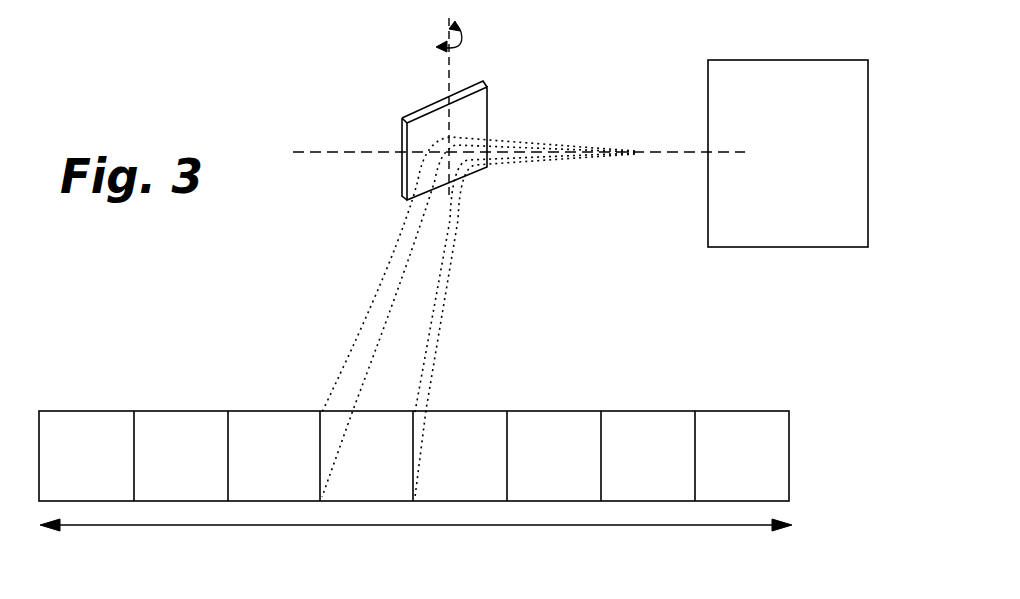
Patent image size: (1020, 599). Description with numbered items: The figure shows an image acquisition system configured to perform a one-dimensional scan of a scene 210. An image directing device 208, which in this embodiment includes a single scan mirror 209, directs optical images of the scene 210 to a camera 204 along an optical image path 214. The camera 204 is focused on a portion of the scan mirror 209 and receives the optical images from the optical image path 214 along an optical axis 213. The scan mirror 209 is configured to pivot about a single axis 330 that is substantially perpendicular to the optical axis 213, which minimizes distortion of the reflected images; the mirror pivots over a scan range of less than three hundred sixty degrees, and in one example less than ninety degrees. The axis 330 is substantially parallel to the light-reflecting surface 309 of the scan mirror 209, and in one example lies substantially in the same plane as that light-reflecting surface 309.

The camera 204 is at (821, 62).
The image directing device 208 is at (492, 146).
The scan mirror 209 is at (487, 90).
The light-reflecting surface 309 is at (472, 125).
The axis 330 is at (449, 65).
The optical axis 213 is at (325, 150).
The optical image path 214 is at (632, 148).
The scene 210 is at (213, 392).